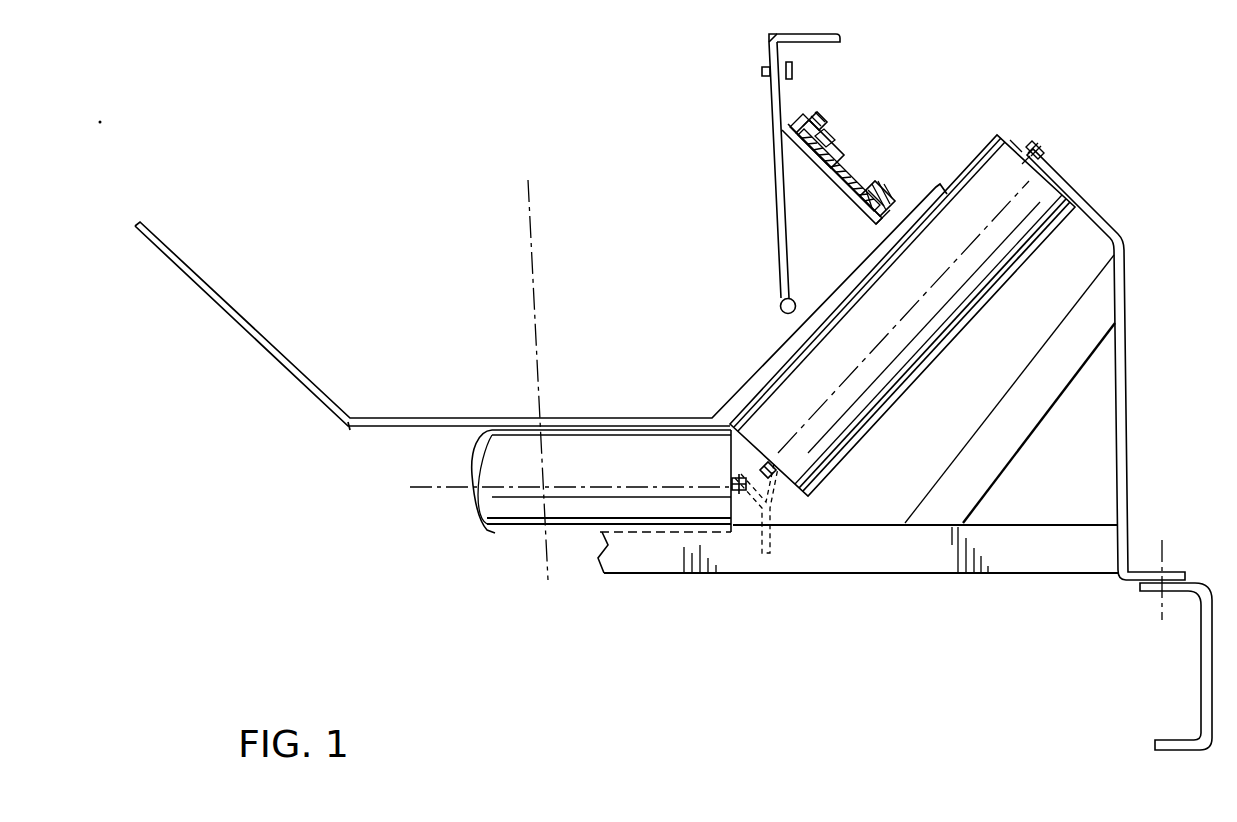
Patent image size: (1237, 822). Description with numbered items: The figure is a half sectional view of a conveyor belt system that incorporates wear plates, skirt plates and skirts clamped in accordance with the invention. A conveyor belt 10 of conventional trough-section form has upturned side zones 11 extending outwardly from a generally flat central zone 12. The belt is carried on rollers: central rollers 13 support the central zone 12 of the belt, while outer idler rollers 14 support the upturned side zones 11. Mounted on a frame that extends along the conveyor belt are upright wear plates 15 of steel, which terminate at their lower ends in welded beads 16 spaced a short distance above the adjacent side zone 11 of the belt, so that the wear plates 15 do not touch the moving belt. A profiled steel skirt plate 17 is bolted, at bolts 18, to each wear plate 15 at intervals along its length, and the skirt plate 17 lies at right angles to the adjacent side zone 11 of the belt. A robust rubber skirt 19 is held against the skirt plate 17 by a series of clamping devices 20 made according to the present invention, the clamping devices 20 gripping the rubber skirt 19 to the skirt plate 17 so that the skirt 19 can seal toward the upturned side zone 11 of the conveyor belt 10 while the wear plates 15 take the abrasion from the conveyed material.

The conveyor belt 10 is at (625, 352).
The upturned side zones 11 is at (777, 365).
The central zone 12 is at (570, 417).
The central rollers 13 is at (515, 530).
The outer idler rollers 14 is at (1043, 240).
The wear plates 15 is at (770, 197).
The welded beads 16 is at (782, 310).
The skirt plate 17 is at (807, 150).
The bolt 18 is at (762, 72).
The rubber skirt 19 is at (866, 222).
The clamping devices 20 is at (866, 115).